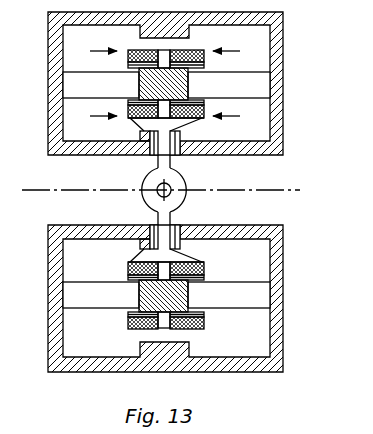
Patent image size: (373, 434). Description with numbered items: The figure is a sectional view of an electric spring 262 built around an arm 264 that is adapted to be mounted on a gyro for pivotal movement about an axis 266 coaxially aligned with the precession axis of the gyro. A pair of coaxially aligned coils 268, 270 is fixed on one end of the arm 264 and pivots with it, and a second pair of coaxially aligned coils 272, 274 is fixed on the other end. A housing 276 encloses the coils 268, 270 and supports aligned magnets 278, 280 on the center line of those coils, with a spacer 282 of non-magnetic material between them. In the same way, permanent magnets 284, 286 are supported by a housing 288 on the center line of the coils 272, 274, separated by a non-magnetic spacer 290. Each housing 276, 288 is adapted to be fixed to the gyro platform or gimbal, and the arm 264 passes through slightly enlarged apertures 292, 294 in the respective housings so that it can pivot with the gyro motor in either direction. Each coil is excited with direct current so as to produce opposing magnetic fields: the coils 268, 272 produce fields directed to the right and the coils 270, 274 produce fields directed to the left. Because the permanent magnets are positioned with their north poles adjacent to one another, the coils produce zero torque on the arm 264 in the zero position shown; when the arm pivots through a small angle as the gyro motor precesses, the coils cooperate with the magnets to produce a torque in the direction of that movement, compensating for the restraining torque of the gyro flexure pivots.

The electric spring 262 is at (281, 200).
The arm 264 is at (155, 222).
The axis 266 is at (156, 187).
The coil 268 is at (140, 50).
The coil 270 is at (190, 50).
The coil 272 is at (134, 328).
The coil 274 is at (188, 330).
The housing 276 is at (278, 33).
The magnet 278 is at (55, 82).
The magnet 280 is at (274, 77).
The spacer 282 is at (204, 99).
The permanent magnet 284 is at (55, 280).
The permanent magnet 286 is at (278, 283).
The housing 288 is at (282, 337).
The spacer 290 is at (203, 270).
The aperture 292 is at (174, 157).
The aperture 294 is at (155, 231).